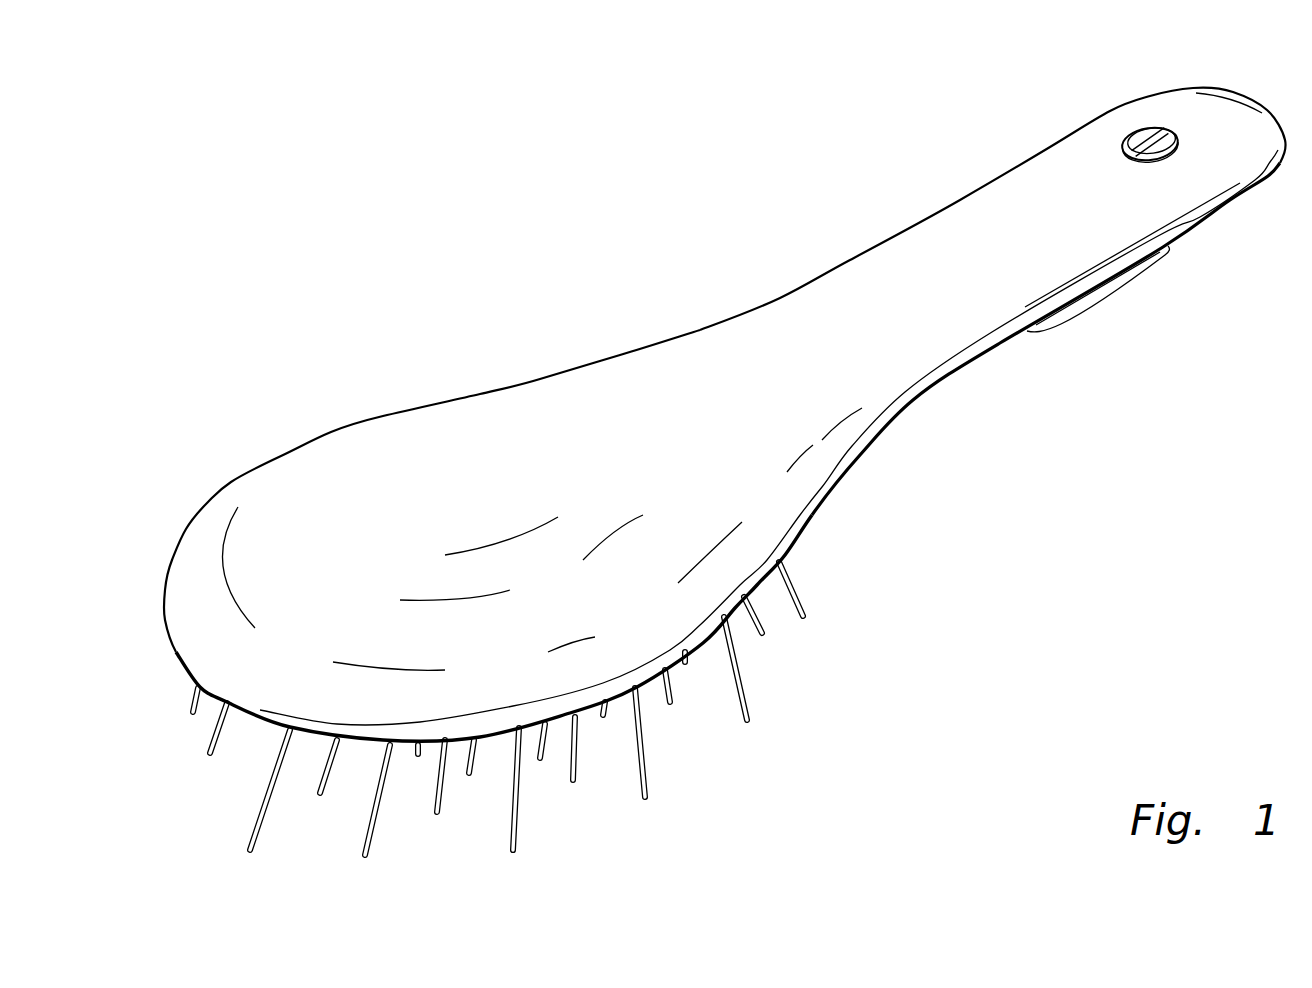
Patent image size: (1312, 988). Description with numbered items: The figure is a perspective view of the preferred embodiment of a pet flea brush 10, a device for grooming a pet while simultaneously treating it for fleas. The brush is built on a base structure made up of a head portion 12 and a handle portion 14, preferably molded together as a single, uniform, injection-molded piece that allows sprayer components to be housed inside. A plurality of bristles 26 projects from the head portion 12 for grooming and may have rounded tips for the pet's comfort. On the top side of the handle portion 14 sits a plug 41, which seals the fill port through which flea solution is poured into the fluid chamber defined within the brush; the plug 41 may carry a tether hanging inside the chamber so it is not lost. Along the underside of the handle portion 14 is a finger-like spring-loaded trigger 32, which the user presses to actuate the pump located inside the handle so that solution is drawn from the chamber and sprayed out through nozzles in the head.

The pet flea brush 10 is at (725, 445).
The head portion 12 is at (318, 435).
The handle portion 14 is at (960, 200).
The bristles 26 is at (743, 683).
The spring-loaded trigger 32 is at (1134, 311).
The plug 41 is at (1155, 128).